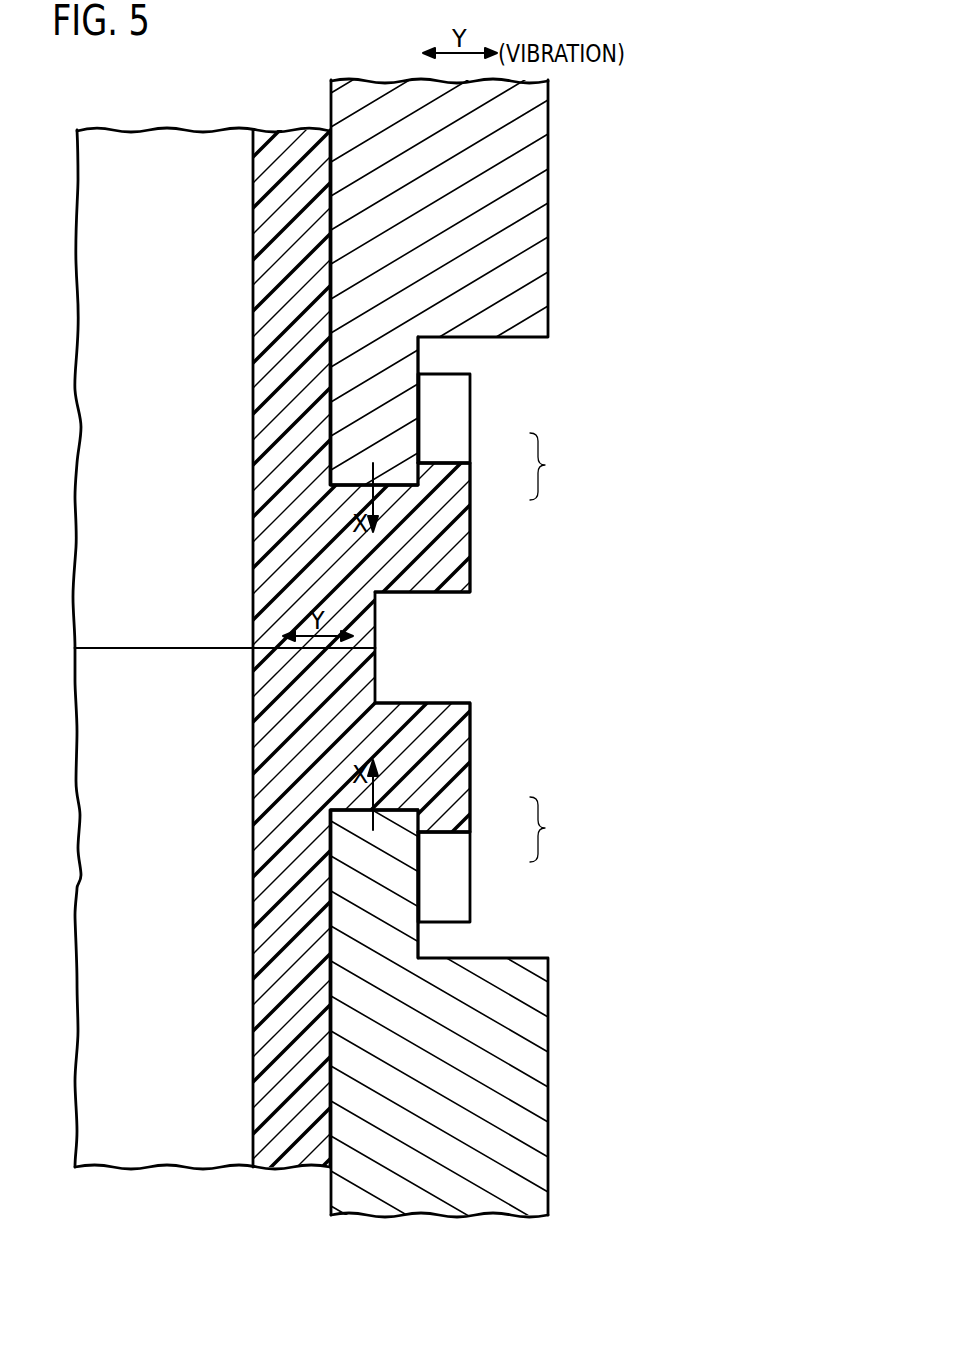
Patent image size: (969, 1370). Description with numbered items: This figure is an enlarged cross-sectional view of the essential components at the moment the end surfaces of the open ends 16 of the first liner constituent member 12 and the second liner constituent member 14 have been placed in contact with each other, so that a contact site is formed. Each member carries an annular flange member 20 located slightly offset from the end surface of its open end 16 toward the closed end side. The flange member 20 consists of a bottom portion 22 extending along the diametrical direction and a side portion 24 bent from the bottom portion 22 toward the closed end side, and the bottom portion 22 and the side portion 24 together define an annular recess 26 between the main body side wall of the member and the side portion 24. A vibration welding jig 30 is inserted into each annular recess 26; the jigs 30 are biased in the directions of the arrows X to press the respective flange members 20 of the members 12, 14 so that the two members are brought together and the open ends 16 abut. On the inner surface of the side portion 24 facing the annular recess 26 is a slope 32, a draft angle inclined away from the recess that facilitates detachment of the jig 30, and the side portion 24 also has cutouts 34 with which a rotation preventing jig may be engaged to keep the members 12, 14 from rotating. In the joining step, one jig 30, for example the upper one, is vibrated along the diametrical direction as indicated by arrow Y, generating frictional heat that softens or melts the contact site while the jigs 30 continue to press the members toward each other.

The first liner constituent member 12 is at (93, 885).
The second liner constituent member 14 is at (95, 411).
The open end 16 is at (117, 647).
The flange member 20 is at (547, 647).
The bottom portion 22 is at (458, 493).
The side portion 24 is at (459, 440).
The annular recess 26 is at (357, 485).
The vibration welding jig 30 is at (538, 200).
The slope 32 is at (420, 397).
The cutout 34 is at (458, 404).